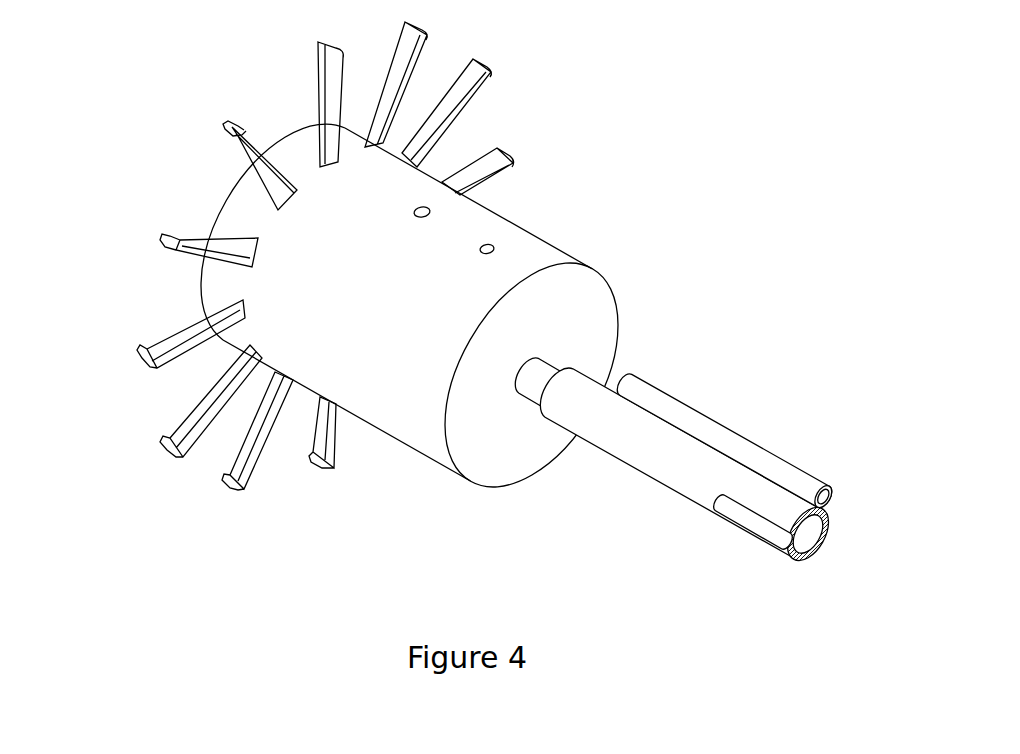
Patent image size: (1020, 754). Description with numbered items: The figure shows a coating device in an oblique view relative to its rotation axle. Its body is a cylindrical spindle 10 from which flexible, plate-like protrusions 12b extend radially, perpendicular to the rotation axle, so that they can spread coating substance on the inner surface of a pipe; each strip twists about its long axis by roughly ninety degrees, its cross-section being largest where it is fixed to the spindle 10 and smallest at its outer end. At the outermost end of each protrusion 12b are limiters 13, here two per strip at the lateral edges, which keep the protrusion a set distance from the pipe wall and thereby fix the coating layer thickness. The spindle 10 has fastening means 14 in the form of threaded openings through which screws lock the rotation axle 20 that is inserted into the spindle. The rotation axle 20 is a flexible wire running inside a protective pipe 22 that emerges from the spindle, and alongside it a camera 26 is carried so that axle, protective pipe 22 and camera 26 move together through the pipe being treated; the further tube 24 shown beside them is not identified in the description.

The cylindrical spindle 10 is at (443, 470).
The protrusions 12b is at (237, 150).
The limiters 13 is at (247, 127).
The fastening means 14 is at (492, 245).
The rotation axle 20 is at (523, 403).
The protective pipe 22 is at (653, 463).
The tube 24 is at (750, 452).
The camera 26 is at (750, 522).